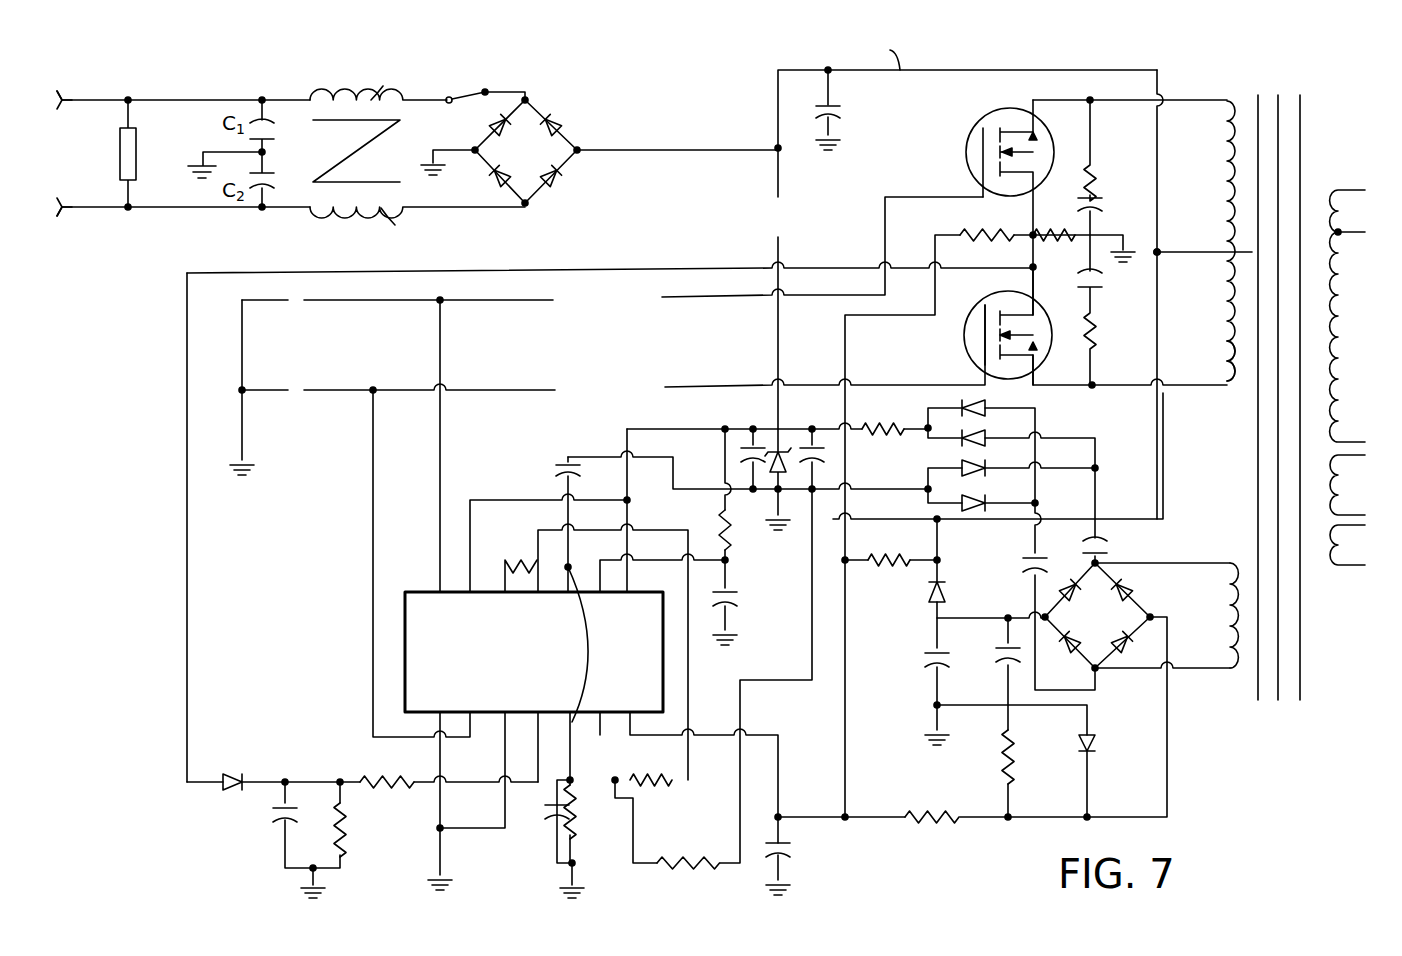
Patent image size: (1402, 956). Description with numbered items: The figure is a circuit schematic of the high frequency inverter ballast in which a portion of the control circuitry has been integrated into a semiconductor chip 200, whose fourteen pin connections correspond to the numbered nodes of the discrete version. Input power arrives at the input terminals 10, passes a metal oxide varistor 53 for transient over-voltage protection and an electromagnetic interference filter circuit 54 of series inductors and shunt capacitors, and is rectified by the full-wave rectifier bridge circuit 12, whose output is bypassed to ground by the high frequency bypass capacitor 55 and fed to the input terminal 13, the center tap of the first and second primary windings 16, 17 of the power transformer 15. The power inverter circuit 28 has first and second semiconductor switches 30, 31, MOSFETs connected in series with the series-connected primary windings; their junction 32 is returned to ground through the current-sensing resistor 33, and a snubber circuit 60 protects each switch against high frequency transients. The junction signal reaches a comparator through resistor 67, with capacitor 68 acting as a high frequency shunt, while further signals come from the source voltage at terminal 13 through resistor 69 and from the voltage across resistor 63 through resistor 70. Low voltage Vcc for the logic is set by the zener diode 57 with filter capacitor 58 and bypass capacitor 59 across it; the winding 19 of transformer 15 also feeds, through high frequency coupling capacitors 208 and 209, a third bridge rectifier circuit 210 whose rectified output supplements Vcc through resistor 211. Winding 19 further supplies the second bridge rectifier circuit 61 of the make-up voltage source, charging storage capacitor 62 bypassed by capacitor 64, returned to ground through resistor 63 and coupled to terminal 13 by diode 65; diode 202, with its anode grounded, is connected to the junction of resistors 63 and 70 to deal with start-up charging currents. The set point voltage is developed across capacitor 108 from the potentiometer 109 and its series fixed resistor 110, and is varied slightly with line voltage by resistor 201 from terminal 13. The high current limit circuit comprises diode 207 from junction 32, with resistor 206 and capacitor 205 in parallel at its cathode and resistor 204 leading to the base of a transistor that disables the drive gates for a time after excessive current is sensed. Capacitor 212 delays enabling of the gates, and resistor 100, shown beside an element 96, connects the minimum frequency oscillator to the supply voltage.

The input terminals 10 is at (62, 153).
The metal oxide varistor over-voltage protection device 53 is at (138, 150).
The electromagnetic interference filter circuit 54 is at (314, 165).
The full-wave rectifier bridge circuit 12 is at (558, 102).
The power inverter circuit 28 is at (1002, 52).
The high frequency bypass capacitor 55 is at (834, 120).
The first semiconductor switch 30 is at (966, 126).
The second semiconductor switch 31 is at (986, 304).
The junction between power switches 32 is at (1036, 222).
The current-sensing resistor 33 is at (1044, 234).
The snubber circuit 60 is at (1138, 314).
The resistor 67 is at (964, 226).
The input terminal of power transformer 13 is at (1156, 252).
The second primary winding 17 is at (1221, 100).
The first primary winding 16 is at (1232, 361).
The power transformer 15 is at (1313, 172).
The winding 19 is at (1232, 650).
The filter capacitor 58 is at (748, 452).
The high frequency bypass capacitor 59 is at (820, 454).
The zener diode 57 is at (782, 490).
The resistor 211 is at (895, 412).
The third bridge rectifier circuit 210 is at (942, 455).
The resistor 100 is at (740, 528).
The capacitor 96 is at (735, 602).
The capacitor 212 is at (570, 474).
The semiconductor chip 200 is at (478, 656).
The resistor 69 is at (892, 558).
The diode 65 is at (928, 602).
The high frequency by-pass capacitor 64 is at (928, 666).
The storage capacitor 62 is at (1000, 652).
The resistor 63 is at (998, 748).
The diode 202 is at (1094, 744).
The resistor 70 is at (934, 820).
The capacitor 68 is at (786, 854).
The high frequency coupling capacitor 209 is at (1024, 570).
The high frequency coupling capacitor 208 is at (1106, 548).
The second bridge rectifier circuit 61 is at (1140, 604).
The diode 207 is at (232, 780).
The resistor 204 is at (384, 780).
The capacitor 205 is at (274, 818).
The resistor 206 is at (344, 822).
The capacitor 108 is at (550, 822).
The potentiometer 109 is at (592, 828).
The resistor 201 is at (694, 870).
The fixed resistor 110 is at (658, 776).